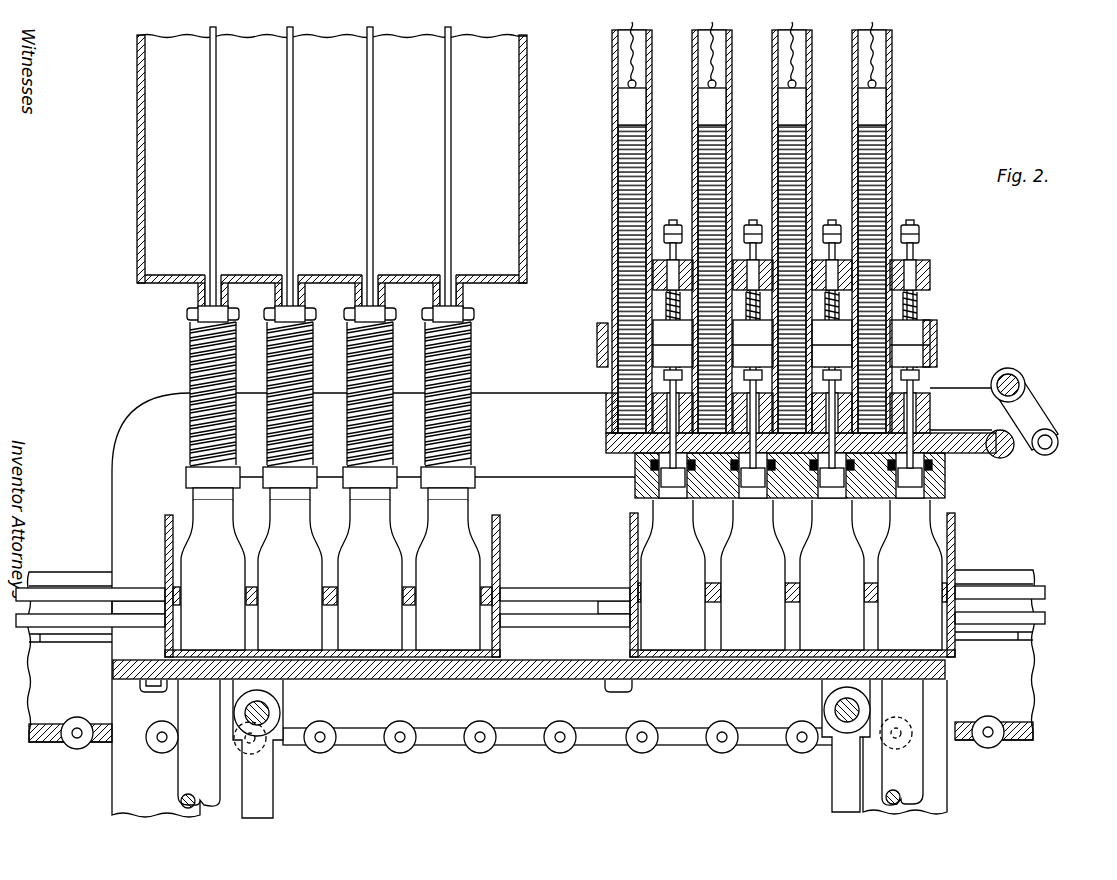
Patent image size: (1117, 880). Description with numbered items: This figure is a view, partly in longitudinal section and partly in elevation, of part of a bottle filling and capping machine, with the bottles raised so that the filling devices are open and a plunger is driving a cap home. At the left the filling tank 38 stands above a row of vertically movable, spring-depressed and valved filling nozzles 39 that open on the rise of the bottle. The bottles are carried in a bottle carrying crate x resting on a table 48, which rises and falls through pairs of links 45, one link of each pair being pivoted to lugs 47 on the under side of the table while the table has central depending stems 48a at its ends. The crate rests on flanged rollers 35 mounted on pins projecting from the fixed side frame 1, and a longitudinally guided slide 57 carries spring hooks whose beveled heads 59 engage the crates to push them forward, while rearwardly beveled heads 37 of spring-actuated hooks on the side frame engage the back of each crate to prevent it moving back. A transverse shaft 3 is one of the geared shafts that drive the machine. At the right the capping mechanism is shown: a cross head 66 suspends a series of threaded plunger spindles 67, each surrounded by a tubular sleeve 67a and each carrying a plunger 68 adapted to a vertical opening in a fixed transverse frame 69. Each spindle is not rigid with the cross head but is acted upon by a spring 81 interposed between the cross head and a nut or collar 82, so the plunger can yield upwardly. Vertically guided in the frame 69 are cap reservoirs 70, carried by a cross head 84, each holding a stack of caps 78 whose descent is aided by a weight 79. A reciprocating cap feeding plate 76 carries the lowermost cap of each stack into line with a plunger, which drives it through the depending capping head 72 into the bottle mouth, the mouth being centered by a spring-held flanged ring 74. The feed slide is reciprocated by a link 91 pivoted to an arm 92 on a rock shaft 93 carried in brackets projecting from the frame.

The fixed side frame 1 is at (958, 793).
The transverse shaft 3 is at (558, 712).
The rollers 35 is at (77, 718).
The beveled heads 37 is at (150, 692).
The filling tank 38 is at (332, 171).
The filling nozzles 39 is at (330, 483).
The links 45 is at (265, 786).
The lugs 47 is at (276, 691).
The table 48 is at (377, 668).
The depending stems 48a is at (549, 744).
The slide 57 is at (70, 624).
The beveled heads 59 is at (150, 610).
The bottle carrying crate x is at (165, 534).
The cross head 66 is at (612, 277).
The plunger spindle 67 is at (912, 402).
The tubular sleeve 67a is at (668, 252).
The plunger 68 is at (791, 475).
The frame 69 is at (606, 412).
The cap reservoirs 70 is at (612, 58).
The capping head 72 is at (637, 488).
The flanged ring 74 is at (650, 466).
The cap feeding plate 76 is at (640, 450).
The caps 78 is at (625, 172).
The weight 79 is at (752, 106).
The spring 81 is at (918, 302).
The nut or collar 82 is at (920, 374).
The cross head 84 is at (597, 338).
The link 91 is at (1043, 453).
The arm 92 is at (1035, 412).
The rock shaft 93 is at (1020, 385).